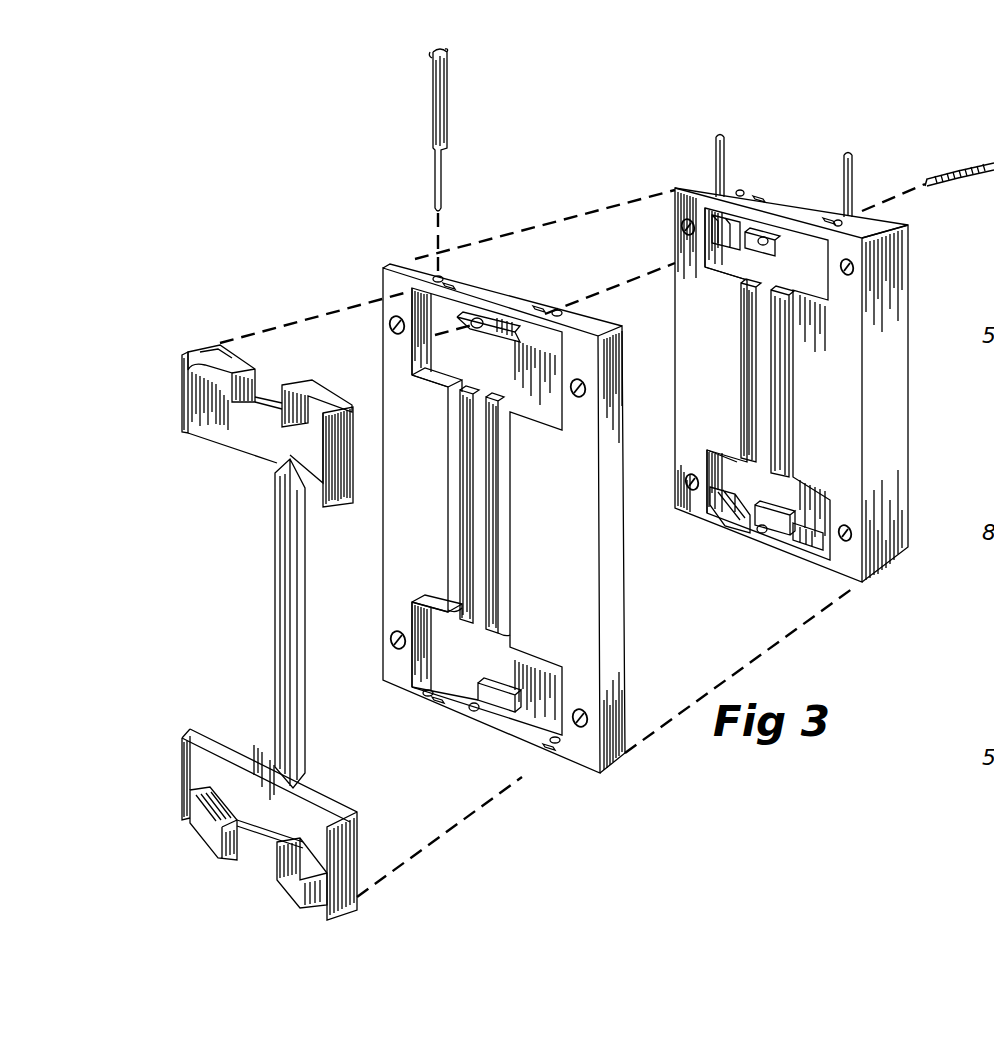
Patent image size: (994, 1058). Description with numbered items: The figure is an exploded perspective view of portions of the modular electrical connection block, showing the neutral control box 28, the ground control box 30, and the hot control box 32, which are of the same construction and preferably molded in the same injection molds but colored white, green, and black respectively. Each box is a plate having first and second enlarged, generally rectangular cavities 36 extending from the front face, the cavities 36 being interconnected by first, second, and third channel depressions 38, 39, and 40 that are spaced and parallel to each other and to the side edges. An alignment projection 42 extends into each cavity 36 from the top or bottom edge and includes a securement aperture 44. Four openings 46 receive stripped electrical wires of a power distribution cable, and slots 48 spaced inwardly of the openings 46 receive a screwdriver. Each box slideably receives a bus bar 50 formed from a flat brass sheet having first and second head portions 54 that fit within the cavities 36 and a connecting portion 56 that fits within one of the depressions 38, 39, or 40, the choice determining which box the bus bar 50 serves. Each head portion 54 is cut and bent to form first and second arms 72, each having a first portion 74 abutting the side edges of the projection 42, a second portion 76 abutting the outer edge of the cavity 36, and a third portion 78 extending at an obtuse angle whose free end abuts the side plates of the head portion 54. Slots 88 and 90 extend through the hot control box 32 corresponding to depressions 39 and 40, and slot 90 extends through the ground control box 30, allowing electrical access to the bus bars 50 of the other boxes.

The neutral control box 28 is at (900, 548).
The ground control box 30 is at (871, 582).
The hot control box 32 is at (615, 755).
The cavity 36 is at (424, 348).
The first channel depression 38 is at (412, 620).
The second channel depression 39 is at (462, 622).
The third channel depression 40 is at (498, 635).
The alignment projection 42 is at (495, 333).
The securement aperture 44 is at (480, 318).
The opening 46 is at (435, 278).
The slot 48 is at (450, 285).
The bus bar 50 is at (200, 598).
The head portion 54 is at (200, 474).
The connecting portion 56 is at (308, 592).
The arm 72 is at (190, 300).
The first portion 74 is at (270, 404).
The second portion 76 is at (230, 362).
The third portion 78 is at (190, 393).
The slot 88 is at (498, 400).
The slot 90 is at (518, 403).